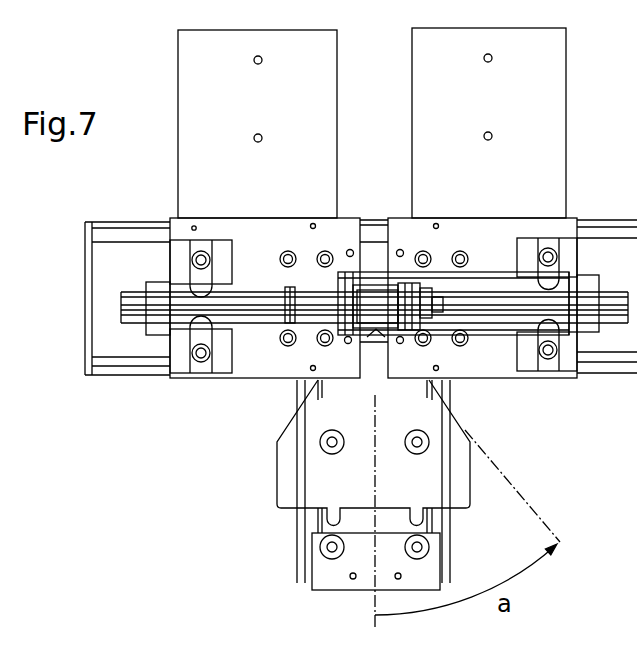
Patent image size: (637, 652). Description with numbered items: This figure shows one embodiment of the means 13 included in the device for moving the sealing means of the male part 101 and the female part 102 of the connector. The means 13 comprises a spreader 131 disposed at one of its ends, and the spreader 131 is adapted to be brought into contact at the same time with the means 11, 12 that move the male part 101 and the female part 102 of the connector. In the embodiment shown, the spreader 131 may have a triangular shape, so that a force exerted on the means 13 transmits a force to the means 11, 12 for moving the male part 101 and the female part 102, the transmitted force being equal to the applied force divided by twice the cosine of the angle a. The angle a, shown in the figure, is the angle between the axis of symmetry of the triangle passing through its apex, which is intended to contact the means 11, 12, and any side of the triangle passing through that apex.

The means for moving the male part 11 is at (265, 247).
The means for moving the female part 12 is at (530, 220).
The means for moving the sealing means 13 is at (458, 470).
The male part 101 is at (257, 313).
The female part 102 is at (486, 303).
The spreader 131 is at (377, 338).